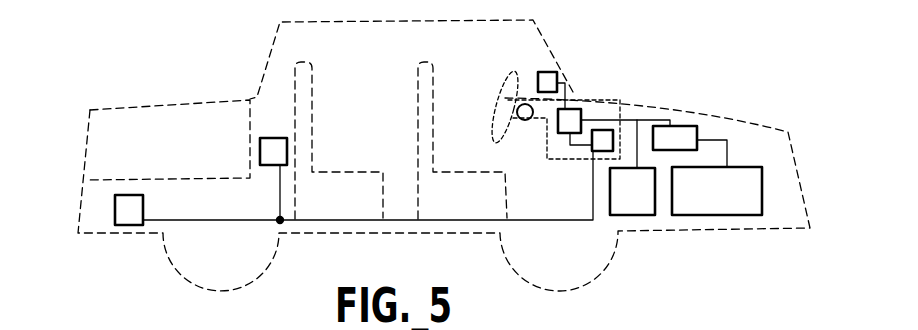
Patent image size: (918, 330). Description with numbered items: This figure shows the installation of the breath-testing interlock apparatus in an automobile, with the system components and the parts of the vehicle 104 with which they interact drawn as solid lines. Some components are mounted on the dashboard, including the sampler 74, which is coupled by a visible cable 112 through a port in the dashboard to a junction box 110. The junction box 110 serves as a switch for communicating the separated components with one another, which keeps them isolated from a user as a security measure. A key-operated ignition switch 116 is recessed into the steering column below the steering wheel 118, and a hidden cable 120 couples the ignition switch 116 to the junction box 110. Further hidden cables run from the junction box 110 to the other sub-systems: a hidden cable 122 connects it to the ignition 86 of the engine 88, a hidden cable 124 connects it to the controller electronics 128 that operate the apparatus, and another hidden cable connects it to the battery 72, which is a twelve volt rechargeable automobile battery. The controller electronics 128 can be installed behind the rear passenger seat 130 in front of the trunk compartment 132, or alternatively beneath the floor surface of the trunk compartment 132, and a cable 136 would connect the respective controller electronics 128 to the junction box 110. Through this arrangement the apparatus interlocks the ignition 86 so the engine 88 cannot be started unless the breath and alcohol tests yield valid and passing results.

The vehicle 104 is at (272, 43).
The trunk compartment 132 is at (197, 143).
The rear passenger seat 130 is at (311, 62).
The steering wheel 118 is at (500, 76).
The hidden cable 120 is at (500, 128).
The ignition switch 116 is at (516, 112).
The sampler 74 is at (539, 74).
The visible cable 112 is at (562, 84).
The junction box 110 is at (580, 110).
The hidden cable 124 is at (570, 142).
The controller electronics 128 is at (597, 145).
The cable 136 is at (197, 222).
The hidden cable 122 is at (656, 122).
The ignition 86 is at (690, 133).
The rechargeable automobile battery 72 is at (643, 207).
The engine 88 is at (727, 205).